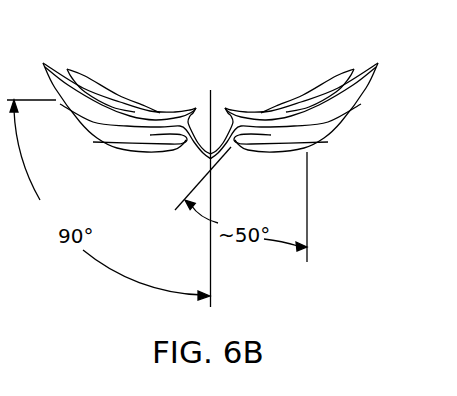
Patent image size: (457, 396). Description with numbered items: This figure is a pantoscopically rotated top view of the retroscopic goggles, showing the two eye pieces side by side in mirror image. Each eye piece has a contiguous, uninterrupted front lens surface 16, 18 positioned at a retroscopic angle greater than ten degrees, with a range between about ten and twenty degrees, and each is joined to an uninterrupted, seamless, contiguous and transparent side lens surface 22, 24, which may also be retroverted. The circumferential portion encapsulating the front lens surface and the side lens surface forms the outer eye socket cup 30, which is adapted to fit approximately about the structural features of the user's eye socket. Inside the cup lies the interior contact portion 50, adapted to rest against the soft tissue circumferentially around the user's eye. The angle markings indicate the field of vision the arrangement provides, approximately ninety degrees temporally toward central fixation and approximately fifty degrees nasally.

The front lens surface 16 is at (272, 152).
The front lens surface 18 is at (147, 152).
The side lens surface 22 is at (347, 130).
The side lens surface 24 is at (72, 127).
The outer eye socket cup 30 is at (185, 102).
The interior contact portion 50 is at (332, 93).